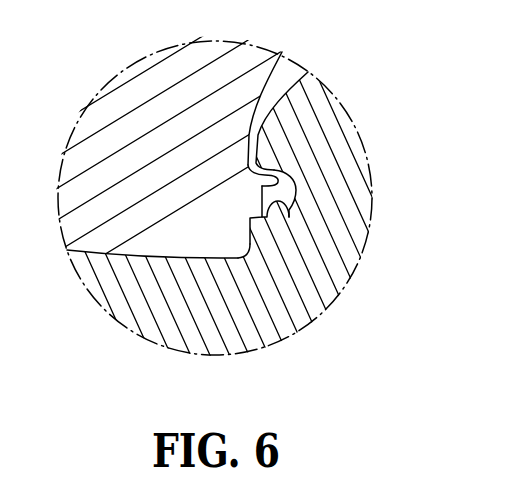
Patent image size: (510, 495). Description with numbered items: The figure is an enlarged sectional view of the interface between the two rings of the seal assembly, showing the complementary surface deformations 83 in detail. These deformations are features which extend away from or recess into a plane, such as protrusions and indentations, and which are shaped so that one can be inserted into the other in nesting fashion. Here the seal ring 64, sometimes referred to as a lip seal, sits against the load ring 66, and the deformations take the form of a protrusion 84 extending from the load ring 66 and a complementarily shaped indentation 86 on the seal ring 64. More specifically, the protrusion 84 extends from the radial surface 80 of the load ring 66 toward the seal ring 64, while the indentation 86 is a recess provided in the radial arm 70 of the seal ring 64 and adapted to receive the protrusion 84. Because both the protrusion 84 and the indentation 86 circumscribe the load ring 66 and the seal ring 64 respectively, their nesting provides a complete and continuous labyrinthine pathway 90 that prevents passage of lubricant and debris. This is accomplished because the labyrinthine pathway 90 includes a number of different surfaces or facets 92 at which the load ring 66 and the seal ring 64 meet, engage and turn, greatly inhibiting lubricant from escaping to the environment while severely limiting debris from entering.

The seal ring 64 is at (320, 270).
The load ring 66 is at (137, 123).
The radial arm 70 is at (332, 152).
The radial surface 80 is at (249, 243).
The complementary surface deformations 83 is at (385, 88).
The protrusion 84 is at (258, 193).
The indentation 86 is at (282, 52).
The labyrinthine pathway 90 is at (262, 151).
The facets 92 is at (292, 195).